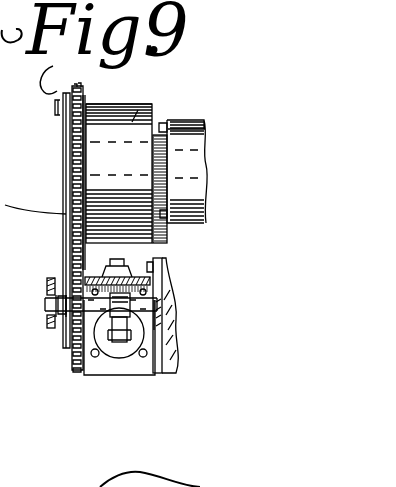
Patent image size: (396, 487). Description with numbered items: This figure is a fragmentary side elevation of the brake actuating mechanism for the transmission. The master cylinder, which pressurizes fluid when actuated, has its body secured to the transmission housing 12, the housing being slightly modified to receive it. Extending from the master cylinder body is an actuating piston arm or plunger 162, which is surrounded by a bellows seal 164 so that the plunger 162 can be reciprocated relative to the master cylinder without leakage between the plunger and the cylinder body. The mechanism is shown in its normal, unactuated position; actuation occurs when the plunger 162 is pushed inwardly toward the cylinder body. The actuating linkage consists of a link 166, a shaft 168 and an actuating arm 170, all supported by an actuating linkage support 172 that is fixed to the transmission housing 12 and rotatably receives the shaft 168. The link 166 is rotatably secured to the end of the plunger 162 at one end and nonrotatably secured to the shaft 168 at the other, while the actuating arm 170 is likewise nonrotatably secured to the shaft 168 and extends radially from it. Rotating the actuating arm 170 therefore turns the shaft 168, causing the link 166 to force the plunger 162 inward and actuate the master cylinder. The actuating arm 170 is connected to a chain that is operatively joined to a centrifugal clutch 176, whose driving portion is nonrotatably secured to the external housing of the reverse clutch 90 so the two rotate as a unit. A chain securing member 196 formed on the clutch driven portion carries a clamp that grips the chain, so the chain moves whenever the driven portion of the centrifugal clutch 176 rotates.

The transmission housing 12 is at (176, 374).
The reverse clutch 90 is at (197, 192).
The plunger 162 is at (118, 335).
The bellows seal 164 is at (100, 338).
The link 166 is at (152, 338).
The shaft 168 is at (150, 311).
The actuating arm 170 is at (70, 366).
The actuating linkage support 172 is at (53, 279).
The centrifugal clutch 176 is at (150, 105).
The chain securing member 196 is at (66, 169).